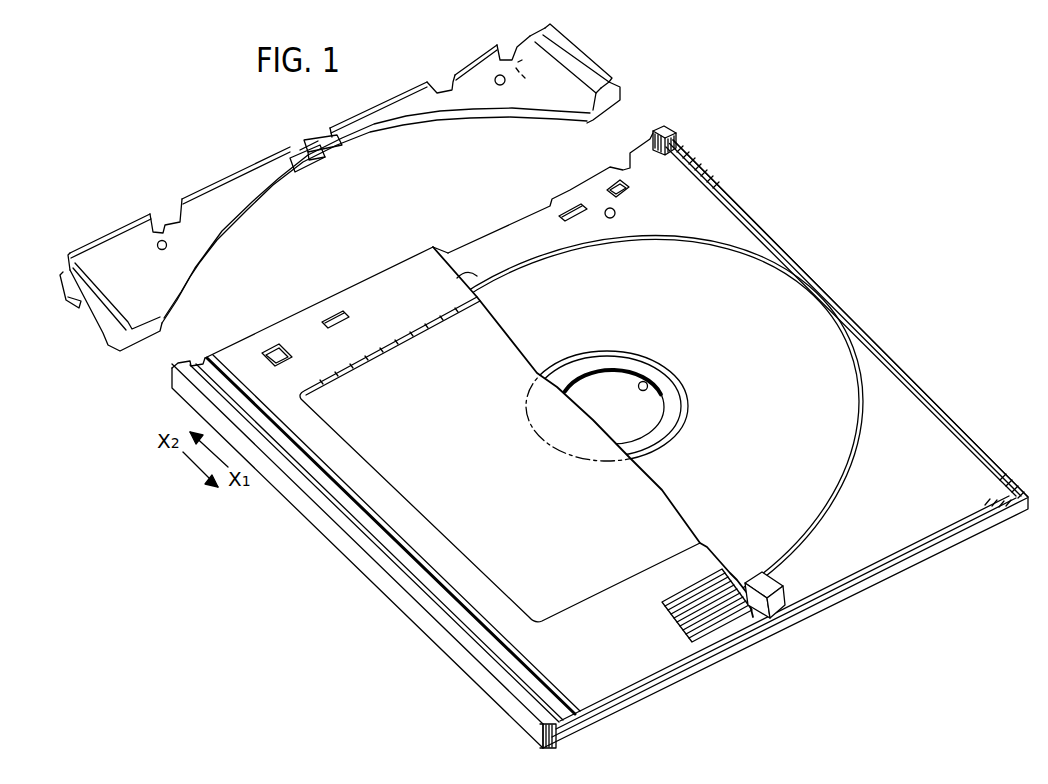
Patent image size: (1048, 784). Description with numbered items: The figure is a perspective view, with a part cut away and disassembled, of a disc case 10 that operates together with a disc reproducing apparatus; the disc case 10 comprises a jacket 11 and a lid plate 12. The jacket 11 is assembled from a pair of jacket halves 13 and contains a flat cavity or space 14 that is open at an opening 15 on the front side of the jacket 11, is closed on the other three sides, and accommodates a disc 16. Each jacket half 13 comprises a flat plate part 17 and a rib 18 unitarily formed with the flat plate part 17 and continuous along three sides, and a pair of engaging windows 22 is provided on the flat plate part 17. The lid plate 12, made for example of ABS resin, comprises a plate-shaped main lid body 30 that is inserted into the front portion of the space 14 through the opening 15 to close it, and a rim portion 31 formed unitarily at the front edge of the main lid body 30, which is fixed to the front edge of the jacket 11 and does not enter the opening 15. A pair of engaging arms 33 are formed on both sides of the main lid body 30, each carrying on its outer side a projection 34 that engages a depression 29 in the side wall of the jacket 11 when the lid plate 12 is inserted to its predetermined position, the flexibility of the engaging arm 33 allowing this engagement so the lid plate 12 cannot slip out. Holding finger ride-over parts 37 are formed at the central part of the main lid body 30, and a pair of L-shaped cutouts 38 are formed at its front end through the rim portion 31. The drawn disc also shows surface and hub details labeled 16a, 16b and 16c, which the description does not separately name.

The disc case 10 is at (701, 134).
The jacket 11 is at (396, 609).
The lid plate 12 is at (207, 178).
The jacket halves 13 is at (708, 656).
The flat cavity or space 14 is at (915, 400).
The opening 15 is at (447, 252).
The disc 16 is at (853, 407).
The disc peripheral edge 16a is at (857, 444).
The center hole 16b is at (648, 388).
The hub 16c is at (677, 430).
The flat plate part 17 is at (945, 425).
The rib 18 is at (845, 320).
The engaging windows 22 is at (330, 312).
The depression 29 is at (668, 155).
The main lid body 30 is at (407, 118).
The rim portion 31 is at (372, 112).
The engaging arms 33 is at (96, 318).
The projection 34 is at (64, 300).
The holding finger ride-over parts 37 is at (300, 150).
The L-shaped cutouts 38 is at (170, 212).